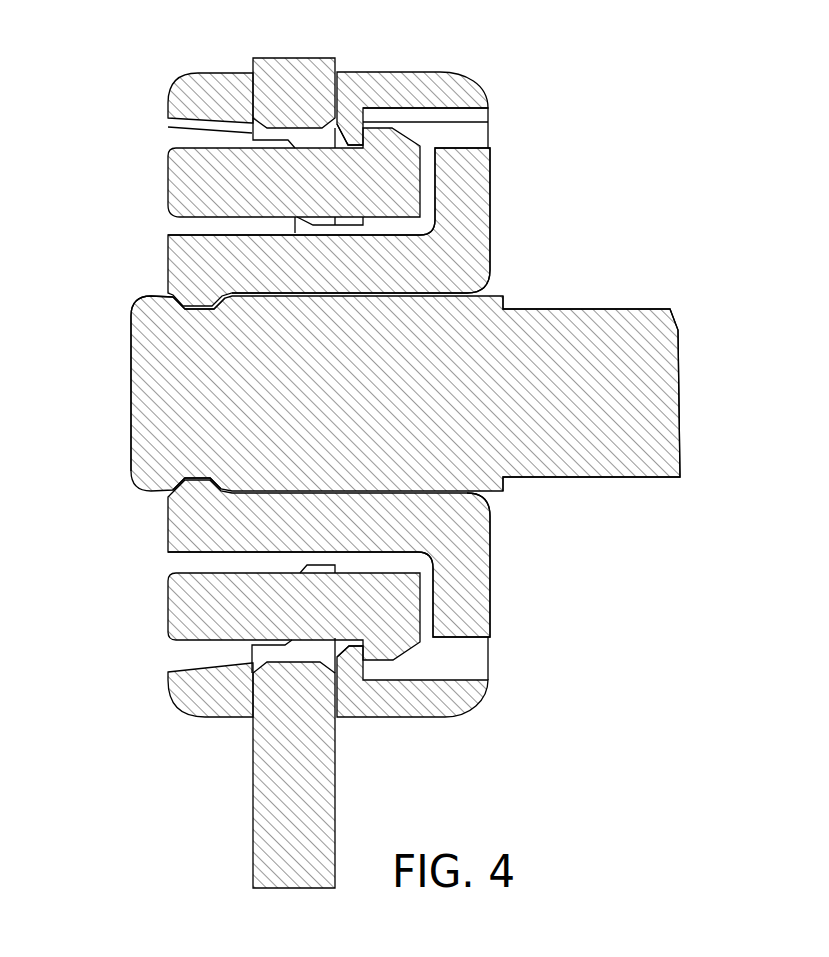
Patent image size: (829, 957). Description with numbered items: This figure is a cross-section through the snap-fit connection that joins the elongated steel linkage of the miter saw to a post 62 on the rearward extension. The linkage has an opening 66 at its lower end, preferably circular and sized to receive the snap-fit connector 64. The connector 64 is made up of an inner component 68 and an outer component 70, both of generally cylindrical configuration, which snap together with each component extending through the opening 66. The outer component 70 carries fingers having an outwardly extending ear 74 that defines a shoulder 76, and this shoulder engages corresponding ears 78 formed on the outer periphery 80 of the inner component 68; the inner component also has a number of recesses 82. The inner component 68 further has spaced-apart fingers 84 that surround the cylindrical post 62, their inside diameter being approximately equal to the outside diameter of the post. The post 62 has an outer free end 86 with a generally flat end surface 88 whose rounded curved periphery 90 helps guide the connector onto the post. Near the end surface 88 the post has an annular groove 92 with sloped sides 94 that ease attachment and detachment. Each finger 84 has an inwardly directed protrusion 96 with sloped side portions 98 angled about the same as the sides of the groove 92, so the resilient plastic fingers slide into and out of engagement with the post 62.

The post 62 is at (566, 478).
The snap-fit connector 64 is at (520, 223).
The opening 66 is at (288, 645).
The inner component 68 is at (482, 177).
The outer component 70 is at (180, 184).
The outwardly extending ear 74 is at (404, 95).
The shoulder 76 is at (366, 130).
The ears 78 is at (345, 112).
The outer periphery 80 is at (463, 83).
The recesses 82 is at (468, 137).
The fingers 84 is at (450, 275).
The outer free end 86 is at (130, 456).
The end surface 88 is at (130, 406).
The rounded curved periphery 90 is at (136, 300).
The annular groove 92 is at (203, 481).
The sloped sides 94 is at (183, 482).
The inwardly directed protrusion 96 is at (193, 296).
The sloped side portions 98 is at (222, 312).